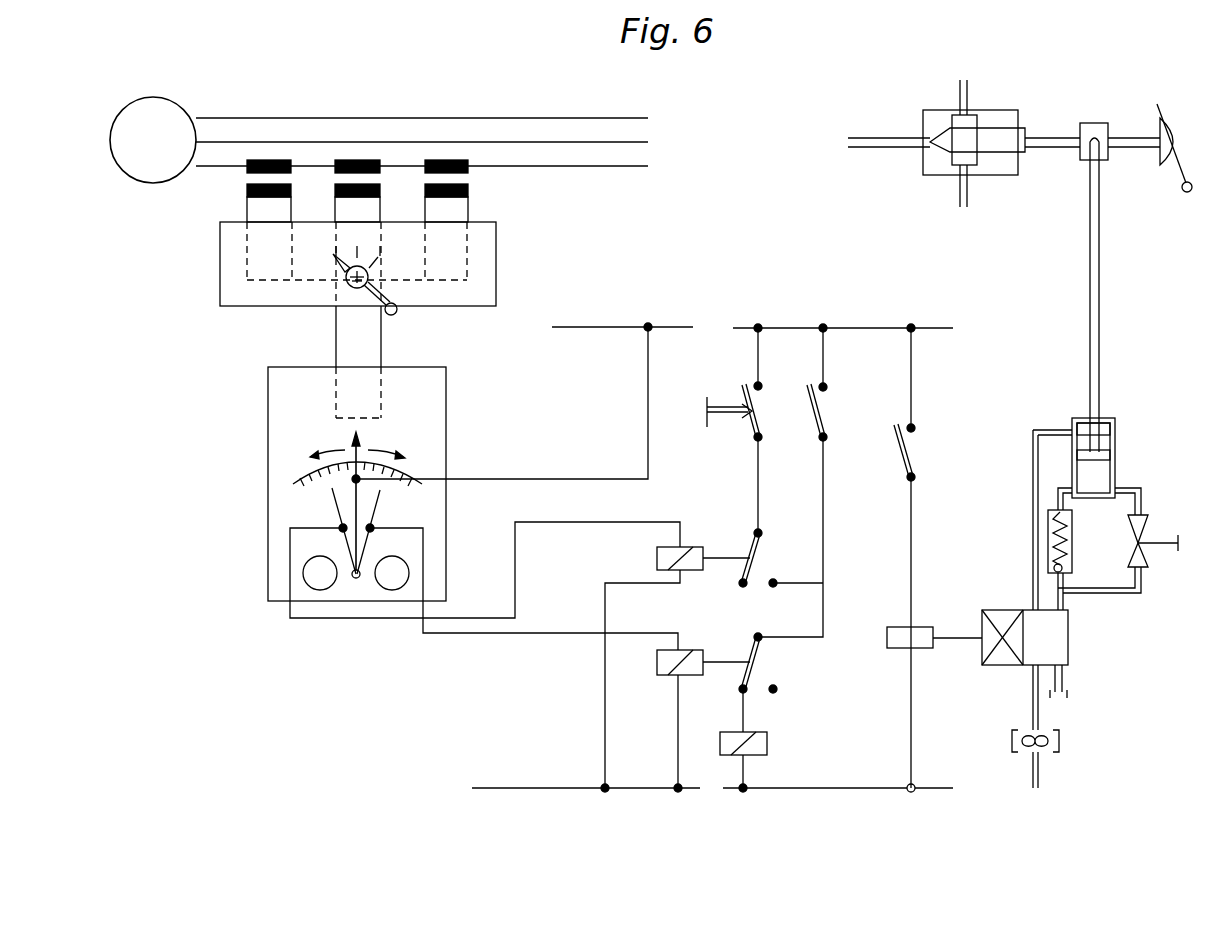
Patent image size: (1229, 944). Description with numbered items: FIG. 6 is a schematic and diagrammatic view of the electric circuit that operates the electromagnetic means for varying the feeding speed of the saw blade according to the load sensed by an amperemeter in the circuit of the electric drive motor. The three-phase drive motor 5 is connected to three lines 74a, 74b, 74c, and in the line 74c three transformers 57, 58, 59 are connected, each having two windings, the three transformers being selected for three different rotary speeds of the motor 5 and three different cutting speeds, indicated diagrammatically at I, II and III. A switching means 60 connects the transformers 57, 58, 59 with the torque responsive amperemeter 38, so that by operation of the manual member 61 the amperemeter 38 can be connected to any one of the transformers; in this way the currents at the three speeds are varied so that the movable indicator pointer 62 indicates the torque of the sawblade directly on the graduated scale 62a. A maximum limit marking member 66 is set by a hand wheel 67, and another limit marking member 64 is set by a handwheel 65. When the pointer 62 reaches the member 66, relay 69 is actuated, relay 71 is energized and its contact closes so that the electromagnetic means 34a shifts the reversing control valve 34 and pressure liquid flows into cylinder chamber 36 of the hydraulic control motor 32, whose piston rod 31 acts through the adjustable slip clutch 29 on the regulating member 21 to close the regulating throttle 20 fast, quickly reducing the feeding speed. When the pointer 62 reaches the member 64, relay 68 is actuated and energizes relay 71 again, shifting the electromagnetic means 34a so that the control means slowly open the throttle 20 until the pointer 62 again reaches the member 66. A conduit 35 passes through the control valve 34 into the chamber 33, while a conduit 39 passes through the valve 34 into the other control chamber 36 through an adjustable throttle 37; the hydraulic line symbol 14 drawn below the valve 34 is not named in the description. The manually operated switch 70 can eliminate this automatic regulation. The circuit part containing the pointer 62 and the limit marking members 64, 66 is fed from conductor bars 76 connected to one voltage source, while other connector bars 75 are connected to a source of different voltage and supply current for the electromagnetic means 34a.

The electric drive motor 5 is at (162, 159).
The transformer 57 is at (267, 160).
The transformer 58 is at (353, 160).
The transformer 59 is at (443, 160).
The switching means 60 is at (228, 262).
The manual member 61 is at (396, 315).
The line 74a is at (626, 118).
The line 74b is at (648, 142).
The line 74c is at (628, 166).
The amperemeter 38 is at (268, 386).
The indicator pointer 62 is at (350, 437).
The graduated scale 62a is at (307, 468).
The limit marking member 64 is at (332, 497).
The handwheel 65 is at (307, 572).
The maximum limit marking member 66 is at (380, 503).
The hand wheel 67 is at (403, 575).
The relay 68 is at (657, 557).
The relay 69 is at (657, 663).
The manually operated switch 70 is at (731, 437).
The relay 71 is at (767, 742).
The connector bars 75 is at (935, 327).
The conductor bars 76 is at (588, 333).
The regulating throttle 20 is at (999, 168).
The regulating member 21 is at (1168, 160).
The adjustable slip clutch 29 is at (1103, 157).
The piston rod 31 is at (1100, 294).
The hydraulic control motor 32 is at (1116, 434).
The chamber 33 is at (1080, 422).
The reversing control valve 34 is at (1068, 640).
The electromagnetic means 34a is at (928, 621).
The conduit 35 is at (1033, 555).
The control chamber 36 is at (1093, 477).
The adjustable throttle 37 is at (1146, 528).
The conduit 39 is at (1062, 680).
The pump 14 is at (1060, 742).